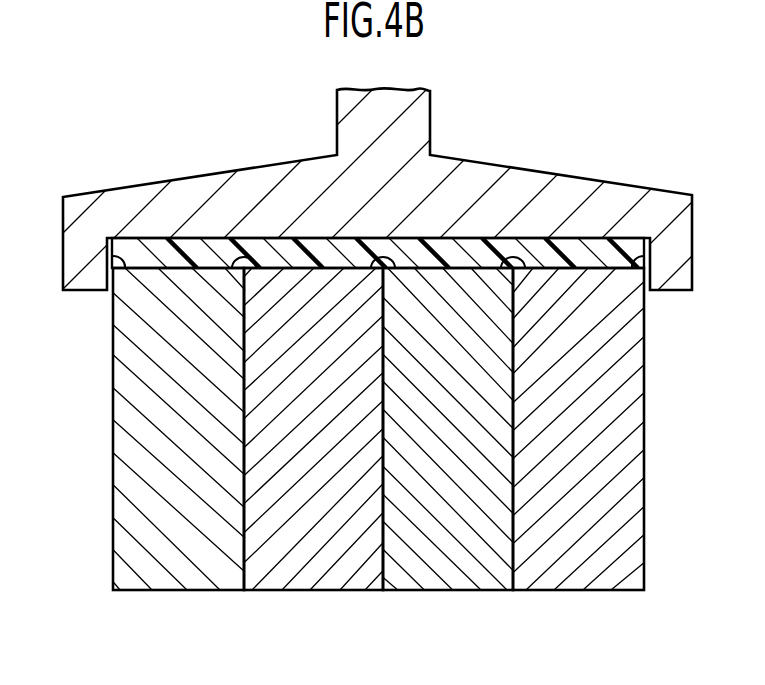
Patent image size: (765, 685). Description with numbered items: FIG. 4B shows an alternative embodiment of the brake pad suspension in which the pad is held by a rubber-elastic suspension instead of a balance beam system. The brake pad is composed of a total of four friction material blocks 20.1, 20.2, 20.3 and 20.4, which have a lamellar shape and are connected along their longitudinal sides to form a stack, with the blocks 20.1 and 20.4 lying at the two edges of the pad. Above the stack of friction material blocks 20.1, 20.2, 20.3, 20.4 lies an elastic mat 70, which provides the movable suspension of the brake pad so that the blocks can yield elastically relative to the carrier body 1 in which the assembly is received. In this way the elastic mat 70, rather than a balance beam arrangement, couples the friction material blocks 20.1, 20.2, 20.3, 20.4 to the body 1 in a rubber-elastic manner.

The sensor / toothed cap body 1 is at (490, 152).
The elastic mat 70 is at (622, 250).
The friction material block 20.1 is at (173, 548).
The friction material block 20.2 is at (320, 528).
The friction material block 20.3 is at (448, 535).
The friction material block 20.4 is at (590, 533).